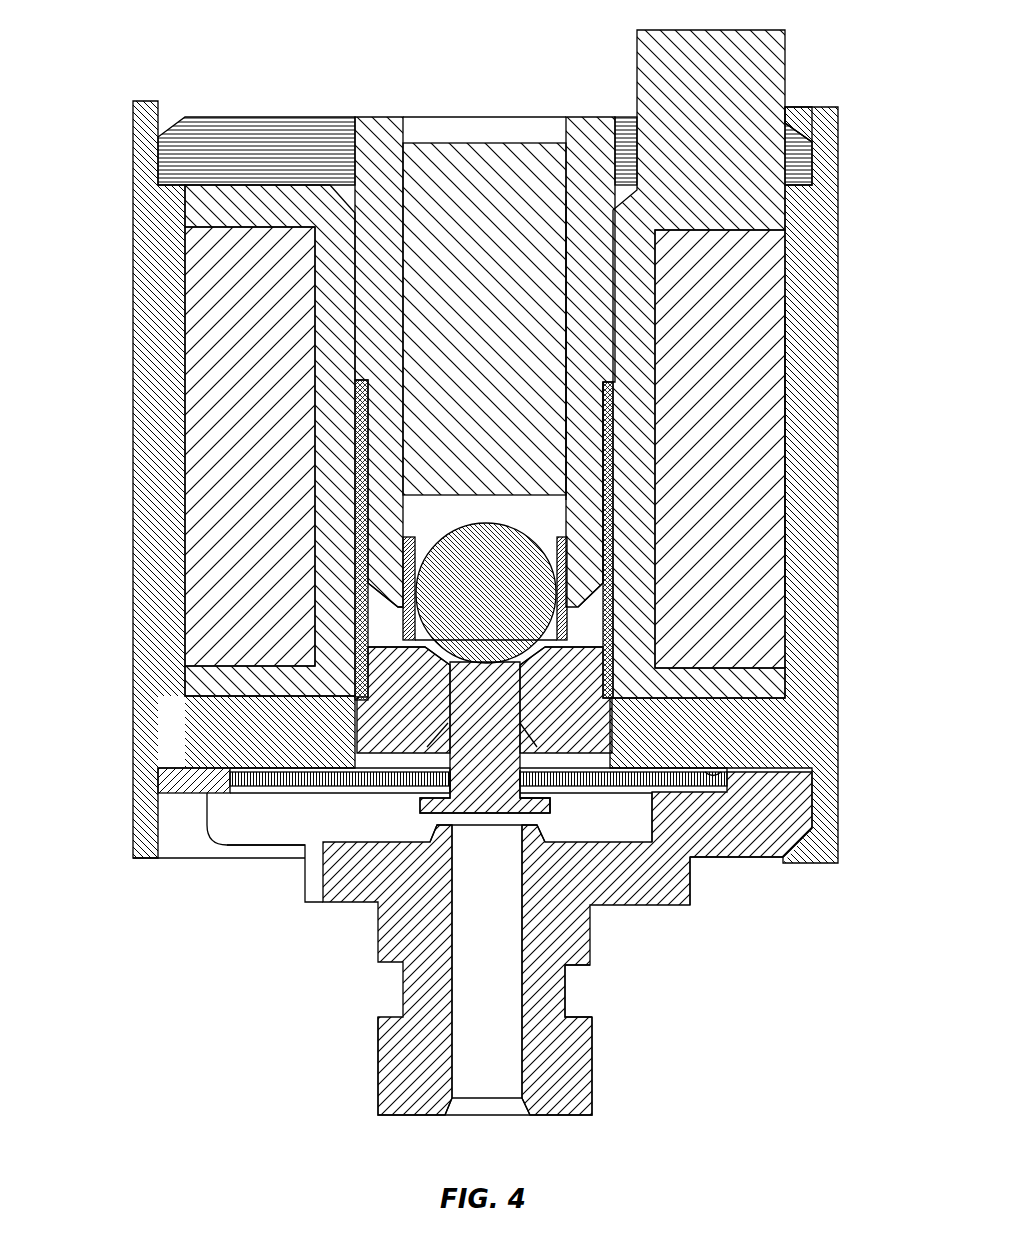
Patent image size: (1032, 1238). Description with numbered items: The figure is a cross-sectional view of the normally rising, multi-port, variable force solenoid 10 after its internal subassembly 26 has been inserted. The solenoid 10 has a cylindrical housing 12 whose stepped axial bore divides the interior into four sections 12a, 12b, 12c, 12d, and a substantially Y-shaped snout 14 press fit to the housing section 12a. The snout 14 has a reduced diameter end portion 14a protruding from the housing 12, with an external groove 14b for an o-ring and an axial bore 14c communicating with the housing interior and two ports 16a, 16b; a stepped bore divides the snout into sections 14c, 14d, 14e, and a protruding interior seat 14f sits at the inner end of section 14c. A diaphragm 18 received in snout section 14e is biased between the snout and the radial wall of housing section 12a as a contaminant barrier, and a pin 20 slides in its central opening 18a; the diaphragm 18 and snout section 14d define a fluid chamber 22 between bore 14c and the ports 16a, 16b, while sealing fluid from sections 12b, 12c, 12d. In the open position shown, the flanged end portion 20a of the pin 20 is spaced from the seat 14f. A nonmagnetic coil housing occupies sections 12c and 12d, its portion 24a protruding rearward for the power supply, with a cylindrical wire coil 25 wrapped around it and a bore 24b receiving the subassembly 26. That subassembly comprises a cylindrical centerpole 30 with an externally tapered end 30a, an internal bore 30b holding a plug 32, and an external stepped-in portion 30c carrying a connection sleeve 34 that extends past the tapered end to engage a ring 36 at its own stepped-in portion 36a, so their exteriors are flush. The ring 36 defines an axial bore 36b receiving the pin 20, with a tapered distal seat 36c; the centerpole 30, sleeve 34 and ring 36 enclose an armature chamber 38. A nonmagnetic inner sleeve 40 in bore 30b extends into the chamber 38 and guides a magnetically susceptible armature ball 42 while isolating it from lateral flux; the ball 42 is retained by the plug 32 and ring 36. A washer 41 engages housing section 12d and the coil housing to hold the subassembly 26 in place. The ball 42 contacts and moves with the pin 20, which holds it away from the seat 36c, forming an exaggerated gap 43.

The variable force solenoid 10 is at (865, 125).
The cylindrical housing 12 is at (822, 227).
The housing section 12a is at (815, 825).
The housing section 12b is at (606, 745).
The housing section 12c is at (783, 427).
The housing section 12d is at (798, 116).
The snout 14 is at (640, 910).
The reduced diameter end portion 14a is at (575, 1078).
The external groove 14b is at (577, 1017).
The axial bore 14c is at (454, 990).
The snout section 14d is at (648, 833).
The snout section 14e is at (714, 782).
The interior seat 14f is at (437, 835).
The port 16a is at (275, 824).
The port 16b is at (780, 877).
The diaphragm 18 is at (590, 790).
The opening 18a is at (455, 775).
The pin 20 is at (472, 727).
The flanged end portion 20a is at (535, 815).
The fluid chamber 22 is at (337, 817).
The coil housing portion 24a is at (770, 58).
The bore 24b is at (362, 337).
The wire coil 25 is at (228, 445).
The subassembly 26 is at (487, 115).
The centerpole 30 is at (395, 115).
The tapered end 30a is at (582, 592).
The bore 30b is at (560, 345).
The external stepped-in portion 30c is at (612, 392).
The plug 32 is at (472, 202).
The connection sleeve 34 is at (613, 478).
The ring 36 is at (562, 702).
The external stepped-in portion 36a is at (582, 668).
The axial bore 36b is at (600, 648).
The seat 36c is at (440, 660).
The armature chamber 38 is at (373, 627).
The inner sleeve 40 is at (565, 563).
The washer 41 is at (258, 117).
The armature ball 42 is at (472, 605).
The gap 43 is at (428, 643).